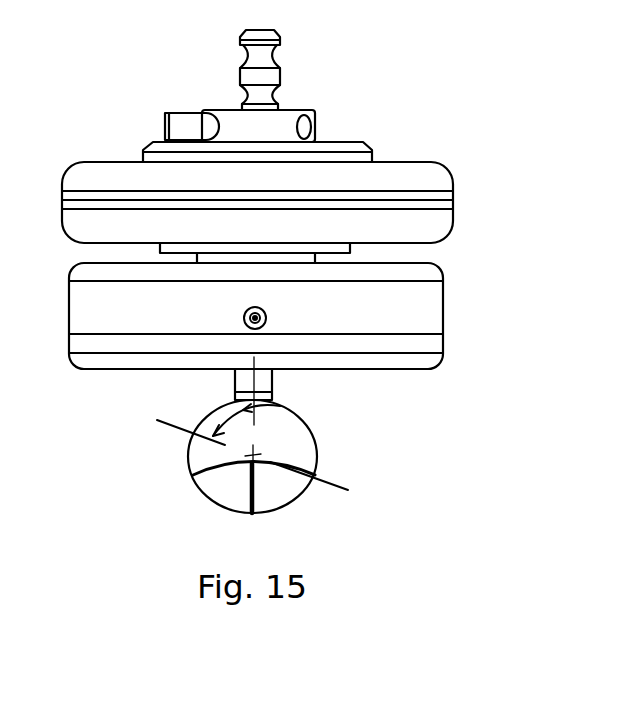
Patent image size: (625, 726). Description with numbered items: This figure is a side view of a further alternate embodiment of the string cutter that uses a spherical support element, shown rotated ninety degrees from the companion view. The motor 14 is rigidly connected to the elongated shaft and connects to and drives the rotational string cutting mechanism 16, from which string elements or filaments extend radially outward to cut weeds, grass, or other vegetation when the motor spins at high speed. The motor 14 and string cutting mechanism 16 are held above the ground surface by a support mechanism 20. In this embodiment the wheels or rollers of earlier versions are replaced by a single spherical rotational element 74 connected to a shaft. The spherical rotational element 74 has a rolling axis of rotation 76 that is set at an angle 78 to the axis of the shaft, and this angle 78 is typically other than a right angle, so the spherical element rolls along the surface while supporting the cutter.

The motor 14 is at (443, 172).
The rotational string cutting mechanism 16 is at (443, 278).
The support mechanism 20 is at (243, 314).
The spherical rotational element 74 is at (300, 492).
The rolling axis of rotation 76 is at (315, 478).
The angle 78 is at (280, 407).